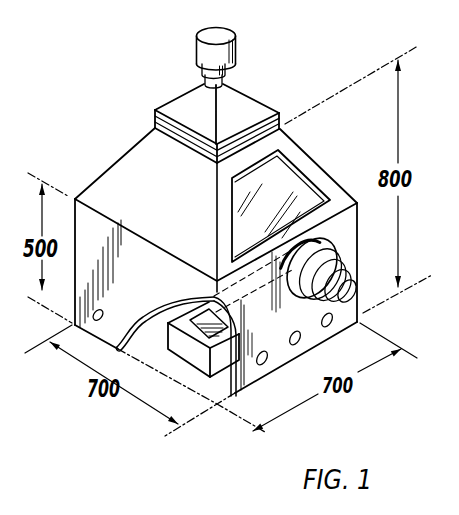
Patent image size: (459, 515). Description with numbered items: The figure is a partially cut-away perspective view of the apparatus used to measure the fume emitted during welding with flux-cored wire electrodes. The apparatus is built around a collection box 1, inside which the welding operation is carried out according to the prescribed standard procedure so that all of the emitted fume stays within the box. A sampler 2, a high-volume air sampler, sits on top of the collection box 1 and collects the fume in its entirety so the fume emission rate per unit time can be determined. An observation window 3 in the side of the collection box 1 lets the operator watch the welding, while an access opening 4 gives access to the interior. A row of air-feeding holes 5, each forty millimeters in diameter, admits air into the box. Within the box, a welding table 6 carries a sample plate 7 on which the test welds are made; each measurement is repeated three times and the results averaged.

The collection box 1 is at (115, 172).
The sampler 2 is at (248, 110).
The observation window 3 is at (305, 188).
The access opening 4 is at (352, 293).
The air-feeding holes 5 is at (266, 360).
The welding table 6 is at (200, 362).
The sample plate 7 is at (205, 318).